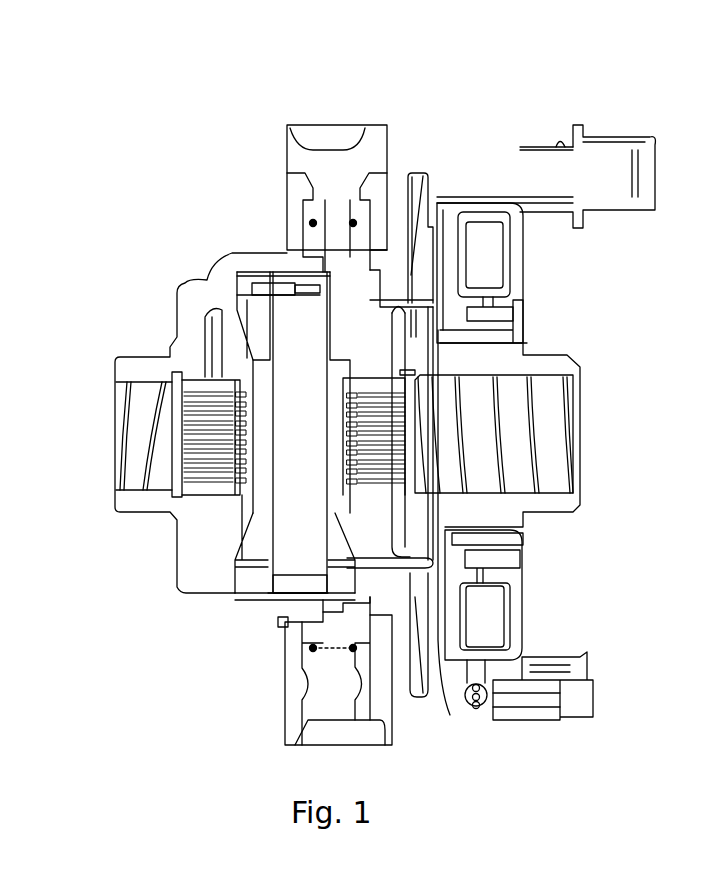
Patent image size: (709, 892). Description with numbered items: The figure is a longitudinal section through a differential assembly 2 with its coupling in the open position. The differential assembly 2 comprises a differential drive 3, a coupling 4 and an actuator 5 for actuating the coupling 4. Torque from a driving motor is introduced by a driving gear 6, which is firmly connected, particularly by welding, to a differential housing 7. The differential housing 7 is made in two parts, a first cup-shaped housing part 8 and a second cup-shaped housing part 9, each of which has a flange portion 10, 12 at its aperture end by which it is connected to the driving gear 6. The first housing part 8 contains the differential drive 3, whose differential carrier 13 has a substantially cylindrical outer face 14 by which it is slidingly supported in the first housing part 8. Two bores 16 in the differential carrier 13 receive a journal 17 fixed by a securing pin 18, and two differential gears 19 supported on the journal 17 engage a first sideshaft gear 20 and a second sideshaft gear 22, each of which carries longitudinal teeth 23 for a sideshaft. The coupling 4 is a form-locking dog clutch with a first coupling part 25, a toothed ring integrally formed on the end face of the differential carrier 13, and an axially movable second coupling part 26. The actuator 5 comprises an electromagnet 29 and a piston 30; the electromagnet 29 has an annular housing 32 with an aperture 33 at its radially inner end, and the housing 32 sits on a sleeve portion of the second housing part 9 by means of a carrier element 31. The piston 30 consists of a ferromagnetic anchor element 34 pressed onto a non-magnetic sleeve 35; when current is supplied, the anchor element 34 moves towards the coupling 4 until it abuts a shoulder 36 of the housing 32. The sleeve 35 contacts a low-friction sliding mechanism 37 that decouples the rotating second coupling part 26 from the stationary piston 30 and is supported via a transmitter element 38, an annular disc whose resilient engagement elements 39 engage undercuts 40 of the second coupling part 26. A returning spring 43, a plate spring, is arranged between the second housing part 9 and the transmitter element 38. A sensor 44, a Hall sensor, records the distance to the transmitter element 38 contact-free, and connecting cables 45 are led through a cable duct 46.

The differential assembly 2 is at (167, 105).
The differential drive 3 is at (230, 262).
The coupling 4 is at (378, 182).
The actuator 5 is at (545, 262).
The driving gear 6 is at (318, 150).
The differential housing 7 is at (247, 253).
The first cup-shaped housing part 8 is at (190, 293).
The second cup-shaped housing part 9 is at (413, 515).
The flange portion 10 is at (343, 630).
The flange portion 12 is at (315, 653).
The differential carrier 13 is at (250, 593).
The cylindrical outer face 14 is at (285, 624).
The bores 16 is at (272, 580).
The journal 17 is at (302, 425).
The securing pin 18 is at (280, 290).
The differential gears 19 is at (257, 323).
The first sideshaft gear 20 is at (217, 518).
The second sideshaft gear 22 is at (395, 485).
The longitudinal teeth 23 is at (190, 455).
The first coupling part 25 is at (357, 245).
The second coupling part 26 is at (387, 277).
The electromagnet 29 is at (530, 282).
The piston 30 is at (512, 327).
The carrier element 31 is at (523, 333).
The annular housing 32 is at (498, 212).
The aperture 33 is at (477, 583).
The anchor element 34 is at (507, 560).
The sleeve 35 is at (497, 543).
The shoulder 36 is at (448, 560).
The sliding mechanism 37 is at (450, 715).
The transmitter element 38 is at (420, 700).
The resilient engagement elements 39 is at (417, 335).
The undercuts 40 is at (378, 308).
The returning spring 43 is at (410, 660).
The sensor 44 is at (557, 158).
The connecting cables 45 is at (480, 708).
The cable duct 46 is at (547, 722).